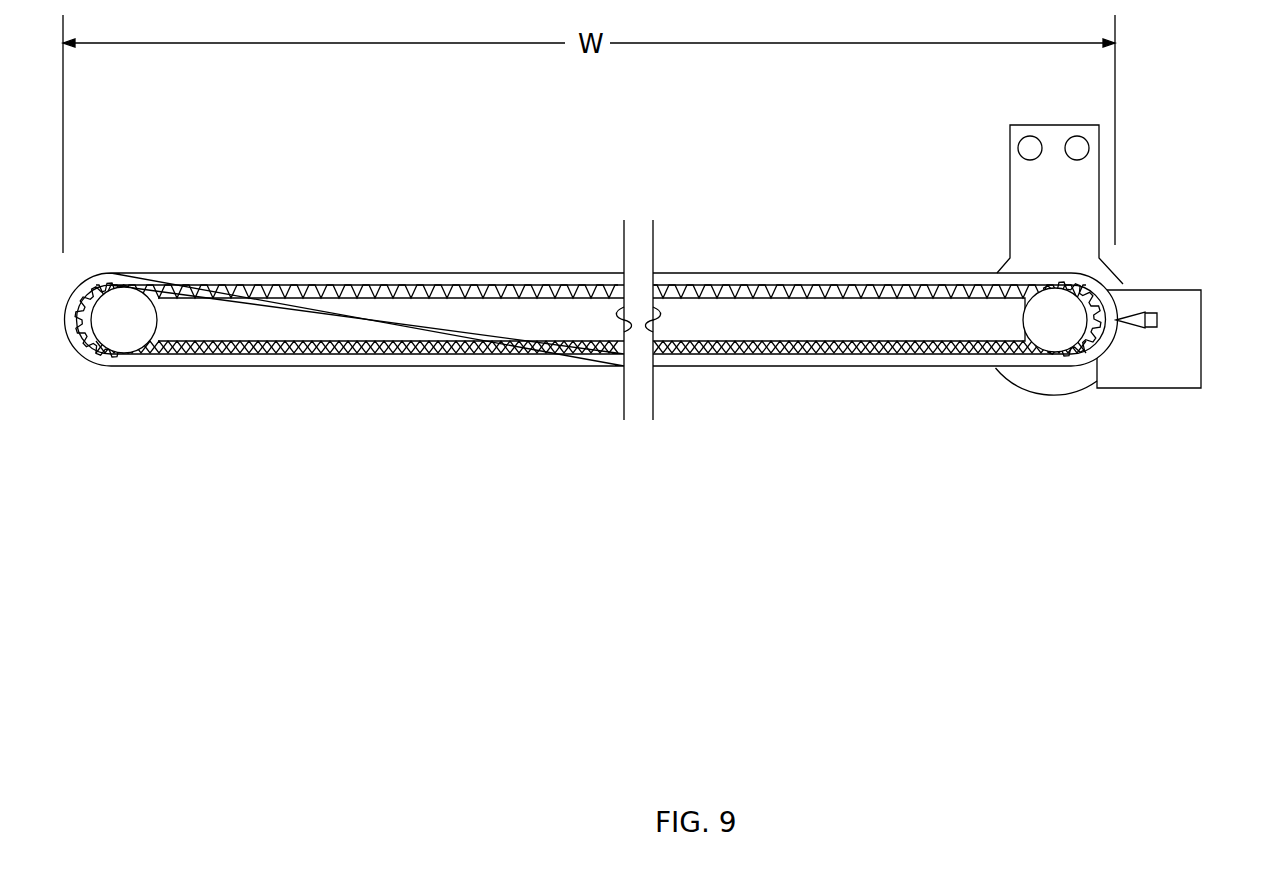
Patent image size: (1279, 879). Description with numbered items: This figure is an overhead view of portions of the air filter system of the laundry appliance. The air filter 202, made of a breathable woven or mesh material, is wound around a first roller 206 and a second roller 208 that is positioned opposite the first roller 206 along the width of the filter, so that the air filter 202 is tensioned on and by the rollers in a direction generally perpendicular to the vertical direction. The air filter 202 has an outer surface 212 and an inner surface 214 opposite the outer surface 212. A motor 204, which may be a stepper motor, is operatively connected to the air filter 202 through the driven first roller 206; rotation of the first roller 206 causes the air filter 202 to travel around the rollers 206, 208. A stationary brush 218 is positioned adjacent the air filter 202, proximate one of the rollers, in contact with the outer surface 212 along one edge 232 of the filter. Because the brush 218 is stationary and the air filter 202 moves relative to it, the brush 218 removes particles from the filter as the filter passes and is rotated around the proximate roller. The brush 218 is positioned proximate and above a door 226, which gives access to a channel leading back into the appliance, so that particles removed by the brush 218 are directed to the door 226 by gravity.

The air filter 202 is at (185, 368).
The motor 204 is at (1062, 385).
The first roller 206 is at (1058, 328).
The second roller 208 is at (108, 312).
The outer surface 212 is at (825, 272).
The inner surface 214 is at (565, 343).
The brush 218 is at (1140, 313).
The door 226 is at (1147, 367).
The edge 232 is at (1120, 312).